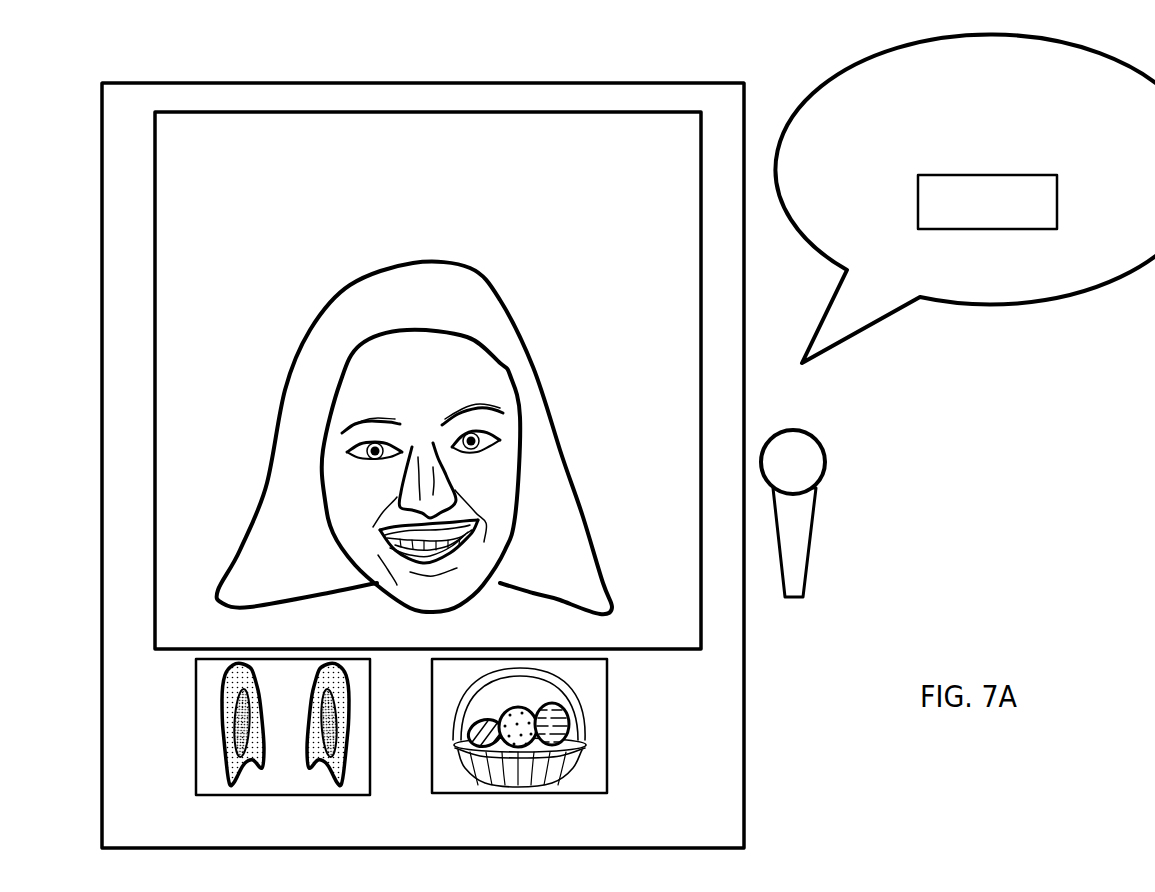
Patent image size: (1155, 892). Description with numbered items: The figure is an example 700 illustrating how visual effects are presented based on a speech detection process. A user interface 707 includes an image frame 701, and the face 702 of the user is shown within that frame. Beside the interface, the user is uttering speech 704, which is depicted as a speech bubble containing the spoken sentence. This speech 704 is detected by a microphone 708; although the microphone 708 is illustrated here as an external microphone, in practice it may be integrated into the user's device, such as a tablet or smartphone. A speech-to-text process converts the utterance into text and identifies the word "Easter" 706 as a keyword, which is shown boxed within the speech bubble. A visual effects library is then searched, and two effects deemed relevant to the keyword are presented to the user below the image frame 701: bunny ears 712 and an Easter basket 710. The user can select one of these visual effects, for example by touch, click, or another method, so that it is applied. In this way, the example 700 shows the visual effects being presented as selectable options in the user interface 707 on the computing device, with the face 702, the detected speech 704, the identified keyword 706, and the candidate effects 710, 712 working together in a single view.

The example 700 is at (192, 49).
The image frame 701 is at (428, 380).
The face 702 is at (500, 303).
The speech 704 is at (947, 287).
The word "Easter" 706 is at (927, 229).
The user interface 707 is at (583, 82).
The microphone 708 is at (797, 533).
The Easter basket 710 is at (607, 723).
The bunny ears 712 is at (199, 733).